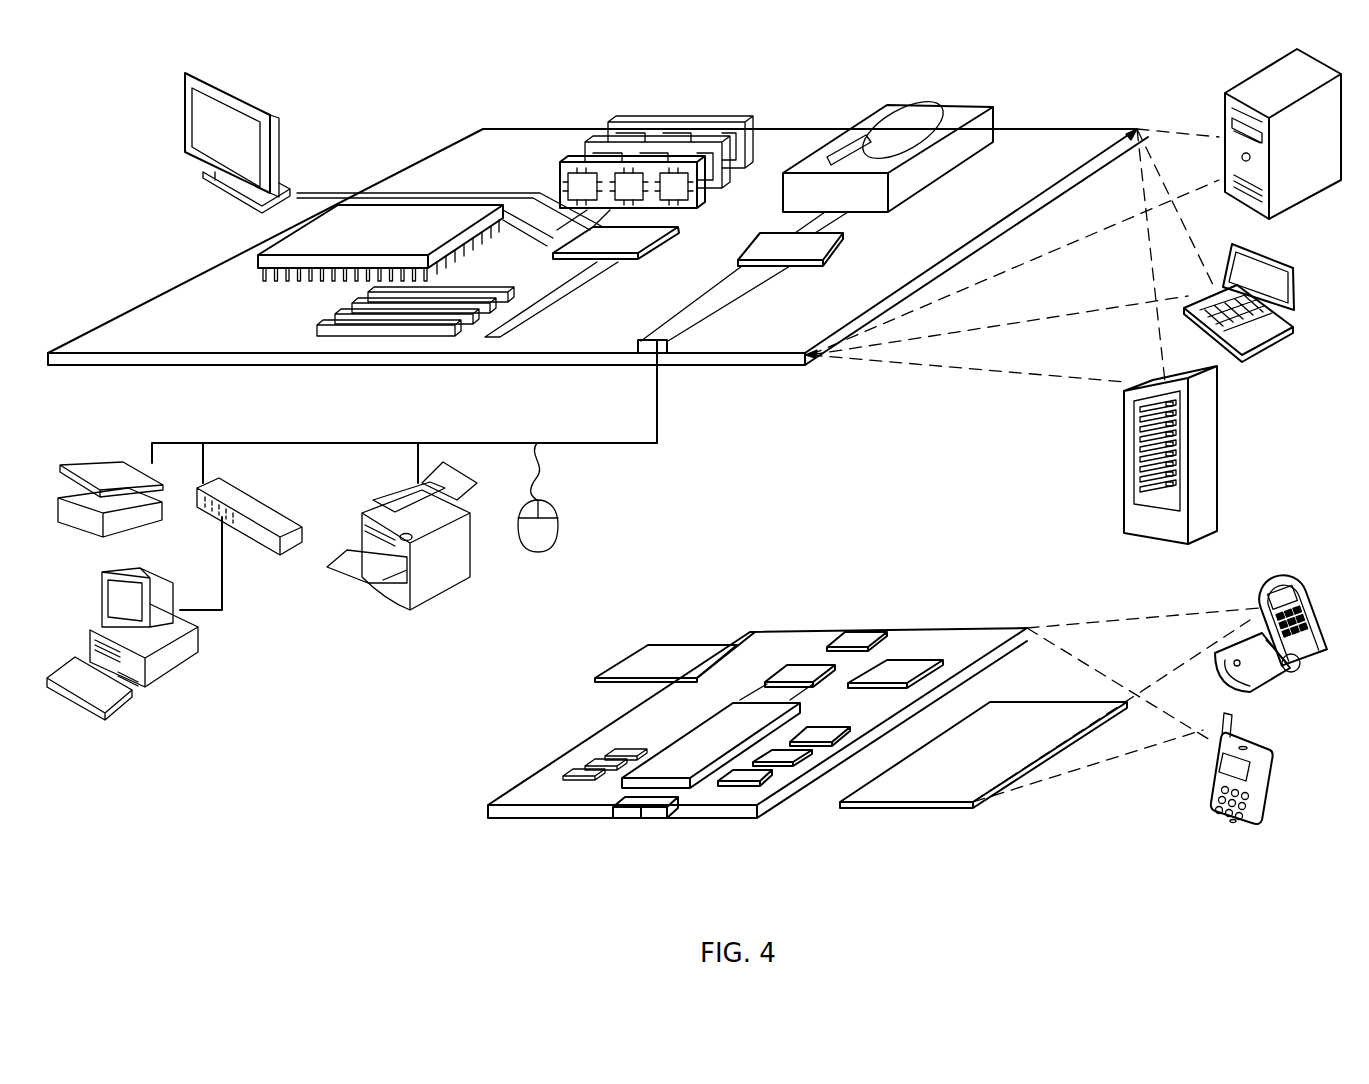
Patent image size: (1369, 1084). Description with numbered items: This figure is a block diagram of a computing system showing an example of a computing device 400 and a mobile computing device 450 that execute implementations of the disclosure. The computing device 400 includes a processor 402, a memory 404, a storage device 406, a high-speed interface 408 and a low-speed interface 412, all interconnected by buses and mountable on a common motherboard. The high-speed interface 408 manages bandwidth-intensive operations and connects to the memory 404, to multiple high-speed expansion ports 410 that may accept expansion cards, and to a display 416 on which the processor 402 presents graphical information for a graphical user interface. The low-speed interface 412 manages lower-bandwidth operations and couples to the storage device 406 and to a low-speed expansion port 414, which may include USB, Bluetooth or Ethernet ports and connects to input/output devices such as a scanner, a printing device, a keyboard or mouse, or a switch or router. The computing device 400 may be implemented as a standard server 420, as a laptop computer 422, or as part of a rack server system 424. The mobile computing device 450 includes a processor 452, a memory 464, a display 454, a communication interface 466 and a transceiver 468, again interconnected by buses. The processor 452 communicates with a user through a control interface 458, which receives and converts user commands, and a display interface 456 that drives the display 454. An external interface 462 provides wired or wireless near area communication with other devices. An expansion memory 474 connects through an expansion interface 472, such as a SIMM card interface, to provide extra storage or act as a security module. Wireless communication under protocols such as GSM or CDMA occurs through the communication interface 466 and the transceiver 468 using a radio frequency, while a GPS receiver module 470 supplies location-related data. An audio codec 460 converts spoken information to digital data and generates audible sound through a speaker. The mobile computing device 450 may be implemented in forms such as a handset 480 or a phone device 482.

The computing device 400 is at (399, 99).
The processor 402 is at (262, 258).
The memory 404 is at (620, 124).
The storage device 406 is at (880, 105).
The high-speed interface 408 is at (582, 240).
The high-speed expansion ports 410 is at (345, 320).
The low-speed interface 412 is at (780, 244).
The low-speed expansion port 414 is at (668, 352).
The display 416 is at (178, 72).
The standard server 420 is at (1226, 111).
The laptop computer 422 is at (1292, 278).
The rack server system 424 is at (1124, 487).
The mobile computing device 450 is at (463, 815).
The processor 452 is at (685, 783).
The display 454 is at (940, 790).
The display interface 456 is at (755, 782).
The control interface 458 is at (795, 762).
The audio codec 460 is at (817, 735).
The external interface 462 is at (643, 810).
The memory 464 is at (583, 760).
The communication interface 466 is at (810, 668).
The transceiver 468 is at (893, 672).
The GPS receiver module 470 is at (868, 631).
The expansion interface 472 is at (737, 640).
The expansion memory 474 is at (650, 645).
The flip phone 480 is at (1270, 578).
The phone device 482 is at (1213, 771).